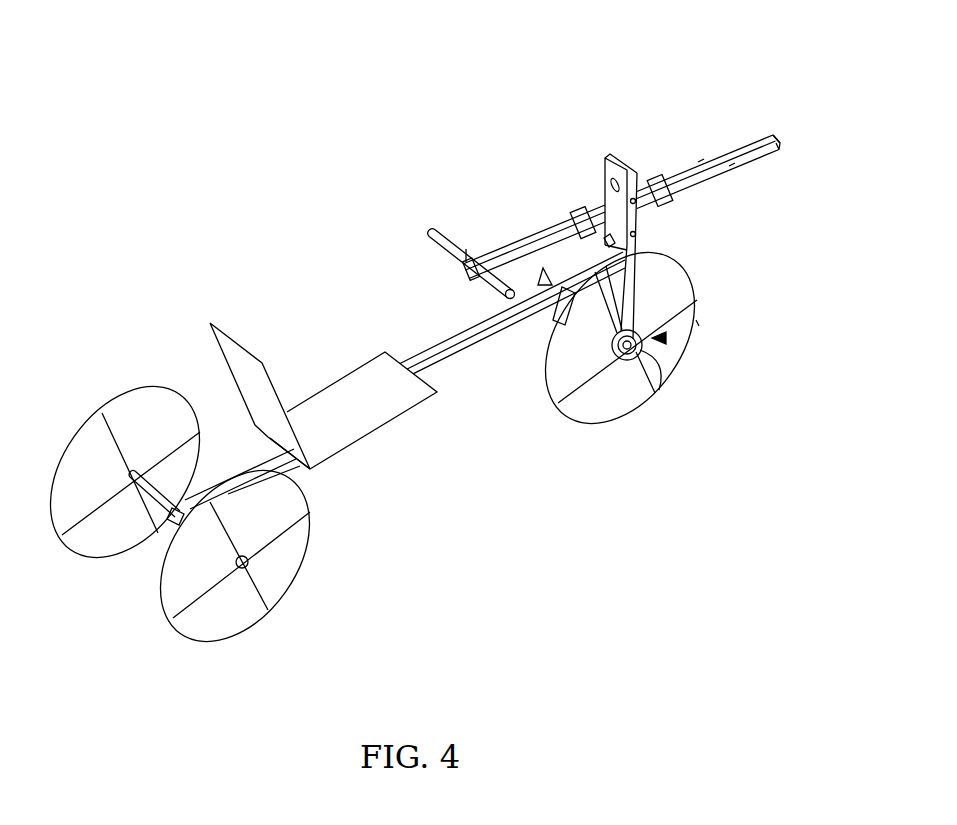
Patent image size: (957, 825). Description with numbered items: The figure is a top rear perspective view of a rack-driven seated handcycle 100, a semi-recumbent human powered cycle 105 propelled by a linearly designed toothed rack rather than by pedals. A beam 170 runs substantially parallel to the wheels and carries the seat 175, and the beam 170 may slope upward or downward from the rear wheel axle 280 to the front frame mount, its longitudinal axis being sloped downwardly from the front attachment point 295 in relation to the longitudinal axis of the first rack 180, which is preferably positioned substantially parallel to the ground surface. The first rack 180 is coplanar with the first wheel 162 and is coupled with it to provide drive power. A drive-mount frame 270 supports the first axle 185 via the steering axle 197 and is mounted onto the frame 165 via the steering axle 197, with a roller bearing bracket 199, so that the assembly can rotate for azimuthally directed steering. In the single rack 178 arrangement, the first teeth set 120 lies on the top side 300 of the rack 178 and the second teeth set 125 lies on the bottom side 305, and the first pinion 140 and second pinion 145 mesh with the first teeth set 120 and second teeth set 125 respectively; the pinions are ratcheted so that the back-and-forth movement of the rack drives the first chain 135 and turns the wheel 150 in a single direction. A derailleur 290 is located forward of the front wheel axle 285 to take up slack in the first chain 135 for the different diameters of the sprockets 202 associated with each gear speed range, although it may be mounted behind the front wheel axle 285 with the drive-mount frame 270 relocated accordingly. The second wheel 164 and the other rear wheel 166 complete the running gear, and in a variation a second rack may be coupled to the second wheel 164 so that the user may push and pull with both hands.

The rack-driven seated handcycle 100 is at (652, 40).
The human powered cycle 105 is at (682, 60).
The first teeth set 120 is at (722, 162).
The second teeth set 125 is at (729, 168).
The first chain 135 is at (606, 322).
The first pinion 140 is at (608, 198).
The second pinion 145 is at (565, 246).
The wheel 150 is at (698, 323).
The first wheel 162 is at (692, 354).
The second wheel 164 is at (134, 388).
The frame 165 is at (636, 292).
The rear wheel 166 is at (314, 527).
The beam 170 is at (447, 364).
The seat 175 is at (342, 410).
The rack 178 is at (742, 148).
The first rack 180 is at (700, 161).
The first axle 185 is at (640, 205).
The steering axle 197 is at (543, 287).
The roller bearing bracket 199 is at (612, 192).
The sprocket 202 is at (664, 337).
The drive-mount frame 270 is at (615, 152).
The rear wheel axle 280 is at (147, 502).
The front wheel axle 285 is at (668, 388).
The derailleur 290 is at (612, 346).
The front attachment point 295 is at (640, 246).
The top side 300 is at (668, 180).
The bottom side 305 is at (762, 170).